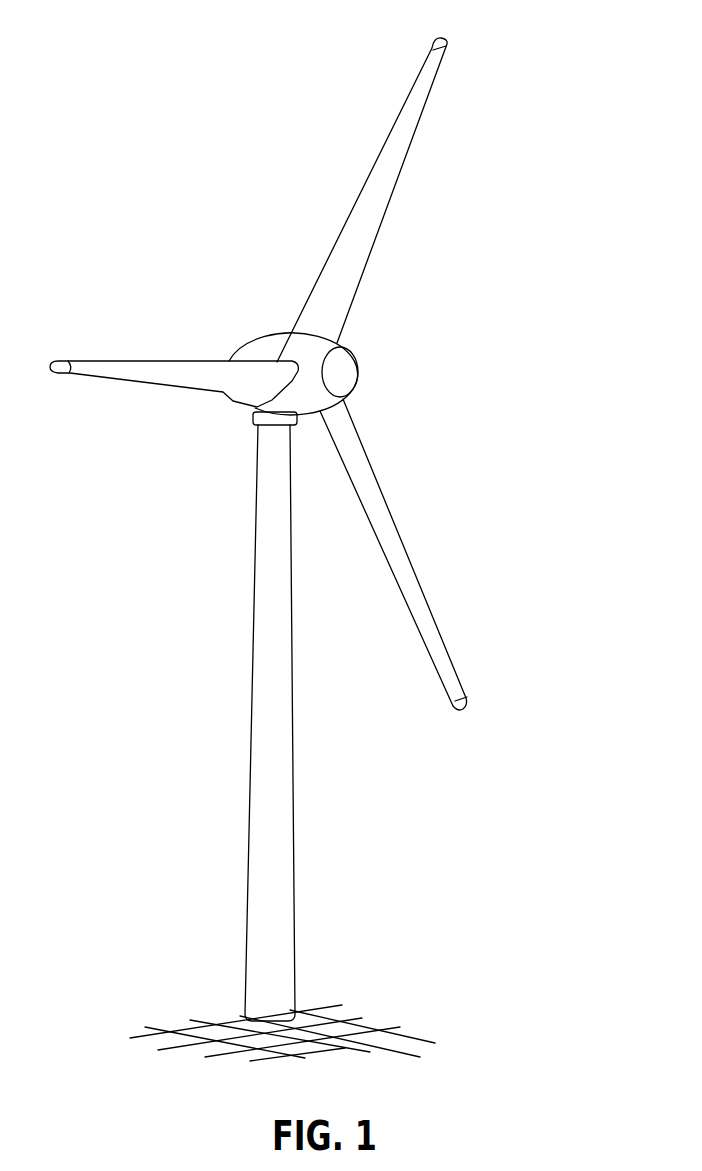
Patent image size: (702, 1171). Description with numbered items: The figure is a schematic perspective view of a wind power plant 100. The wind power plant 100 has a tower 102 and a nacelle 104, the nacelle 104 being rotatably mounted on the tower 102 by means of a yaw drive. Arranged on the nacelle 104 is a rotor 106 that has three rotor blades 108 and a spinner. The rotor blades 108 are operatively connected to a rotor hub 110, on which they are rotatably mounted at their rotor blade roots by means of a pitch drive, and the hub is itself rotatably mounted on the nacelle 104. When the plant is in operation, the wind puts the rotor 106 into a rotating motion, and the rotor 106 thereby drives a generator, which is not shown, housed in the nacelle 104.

The wind power plant 100 is at (180, 489).
The tower 102 is at (285, 848).
The nacelle 104 is at (265, 353).
The rotor 106 is at (470, 312).
The rotor blades 108 is at (112, 370).
The rotor hub 110 is at (347, 372).